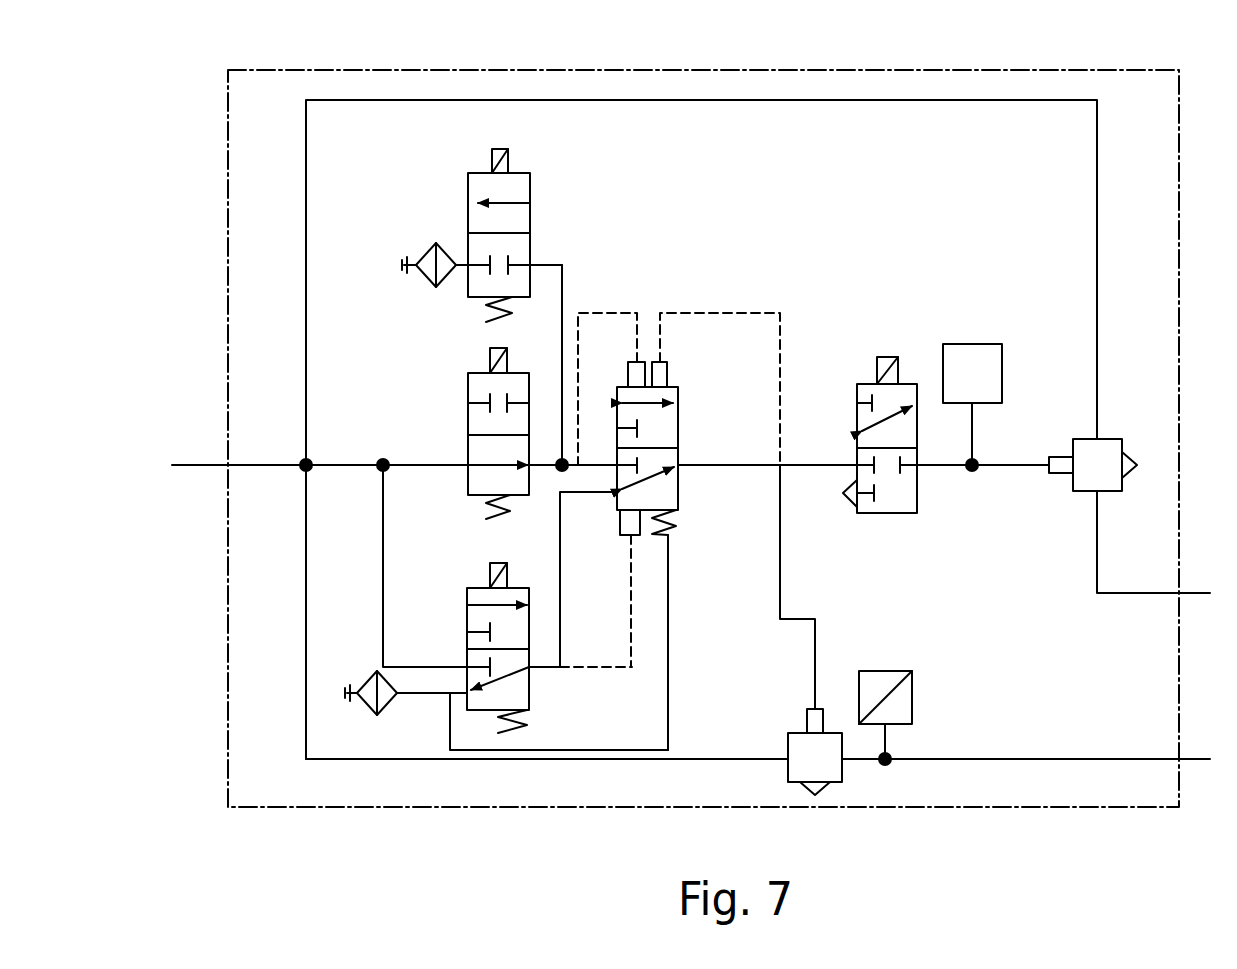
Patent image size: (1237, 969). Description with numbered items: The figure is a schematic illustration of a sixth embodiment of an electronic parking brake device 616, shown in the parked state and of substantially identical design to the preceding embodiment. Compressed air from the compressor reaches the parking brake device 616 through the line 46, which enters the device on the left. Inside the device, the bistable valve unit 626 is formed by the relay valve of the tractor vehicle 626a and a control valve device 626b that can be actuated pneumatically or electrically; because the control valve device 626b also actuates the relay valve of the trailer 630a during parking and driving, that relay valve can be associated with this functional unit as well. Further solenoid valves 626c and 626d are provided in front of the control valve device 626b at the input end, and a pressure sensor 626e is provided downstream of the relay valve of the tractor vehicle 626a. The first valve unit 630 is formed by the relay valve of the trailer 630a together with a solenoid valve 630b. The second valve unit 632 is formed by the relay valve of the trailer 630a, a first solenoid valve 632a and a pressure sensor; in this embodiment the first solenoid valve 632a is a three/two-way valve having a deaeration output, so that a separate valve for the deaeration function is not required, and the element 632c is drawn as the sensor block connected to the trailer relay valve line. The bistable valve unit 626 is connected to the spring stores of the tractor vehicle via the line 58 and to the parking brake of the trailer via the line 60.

The electronic parking brake device 616 is at (1065, 48).
The bistable valve unit 626 is at (502, 850).
The first valve unit 630 is at (981, 850).
The second valve unit 632 is at (1118, 850).
The line 46 is at (283, 462).
The relay valve of the tractor vehicle 626a is at (825, 775).
The control valve device 626b is at (678, 387).
The solenoid valve 626c is at (523, 192).
The solenoid valve 626d is at (468, 388).
The pressure sensor 626e is at (912, 708).
The relay valve of the trailer 630a is at (1110, 457).
The solenoid valve 630b is at (515, 695).
The 3/2-way valve 632a is at (870, 384).
The pressure sensor 632c is at (972, 344).
The line 60 is at (1157, 593).
The line 58 is at (1192, 757).